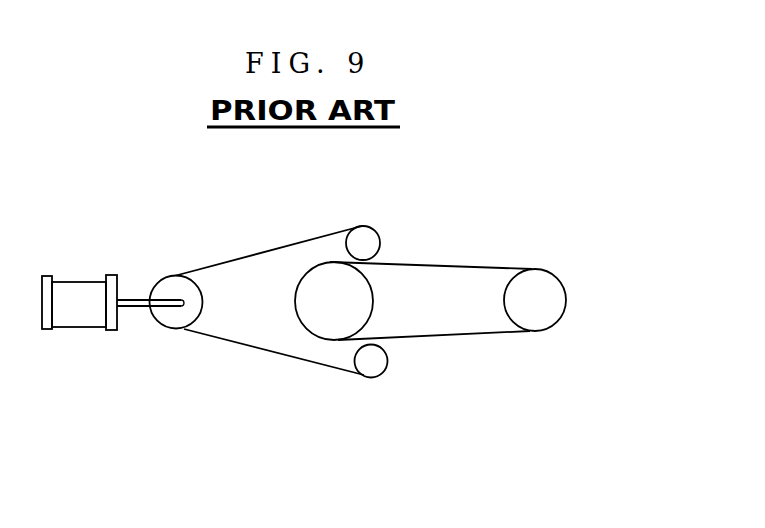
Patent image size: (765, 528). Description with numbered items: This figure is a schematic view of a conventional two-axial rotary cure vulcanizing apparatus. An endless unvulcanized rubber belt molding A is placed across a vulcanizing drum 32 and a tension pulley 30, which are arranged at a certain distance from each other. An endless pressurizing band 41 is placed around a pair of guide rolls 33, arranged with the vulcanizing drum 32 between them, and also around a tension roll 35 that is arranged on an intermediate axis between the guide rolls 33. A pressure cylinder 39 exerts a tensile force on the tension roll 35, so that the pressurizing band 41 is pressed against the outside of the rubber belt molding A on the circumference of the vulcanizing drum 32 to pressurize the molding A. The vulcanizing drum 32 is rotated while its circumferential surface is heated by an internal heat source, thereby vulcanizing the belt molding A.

The tension pulley 30 is at (550, 292).
The vulcanizing drum 32 is at (312, 300).
The guide rolls 33 is at (369, 240).
The tension roll 35 is at (176, 319).
The pressure cylinder 39 is at (80, 315).
The pressurizing band 41 is at (354, 328).
The rubber belt molding A is at (465, 338).